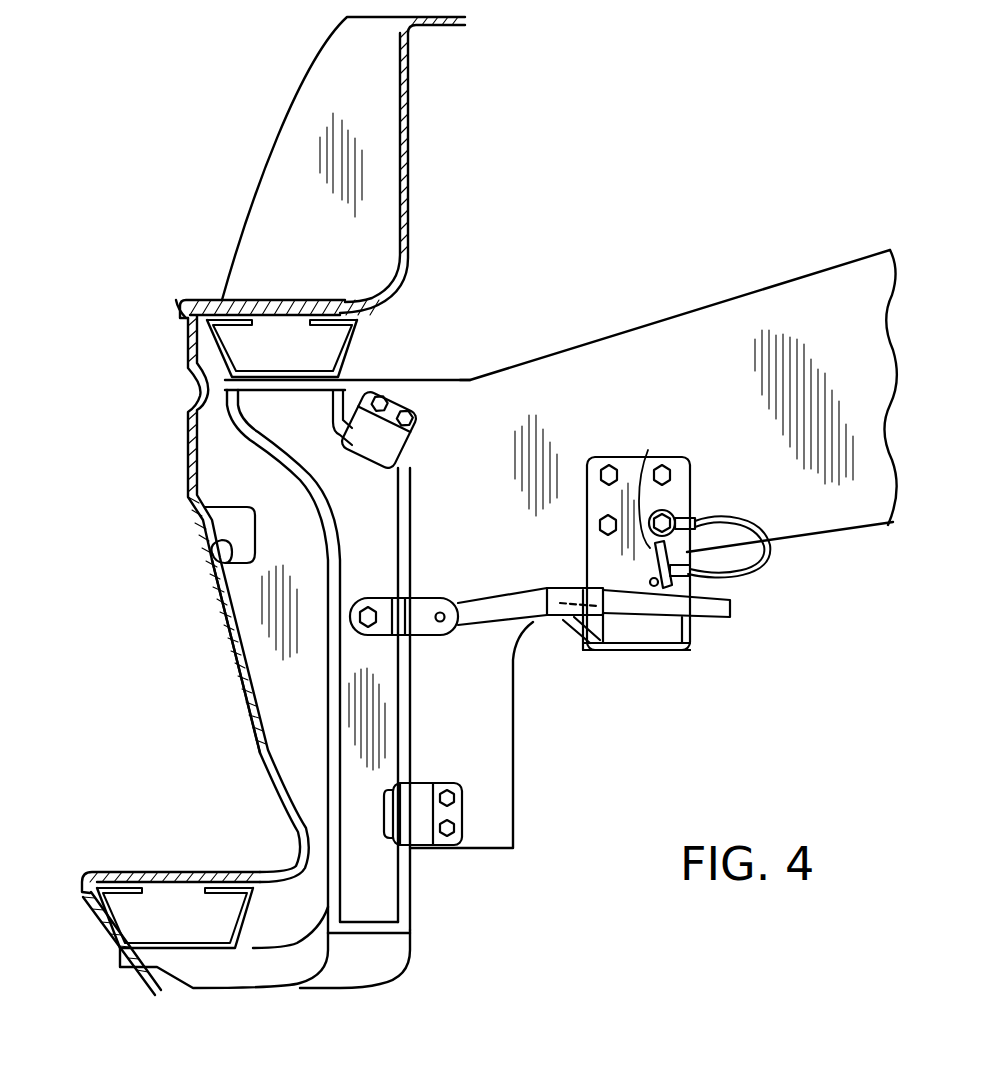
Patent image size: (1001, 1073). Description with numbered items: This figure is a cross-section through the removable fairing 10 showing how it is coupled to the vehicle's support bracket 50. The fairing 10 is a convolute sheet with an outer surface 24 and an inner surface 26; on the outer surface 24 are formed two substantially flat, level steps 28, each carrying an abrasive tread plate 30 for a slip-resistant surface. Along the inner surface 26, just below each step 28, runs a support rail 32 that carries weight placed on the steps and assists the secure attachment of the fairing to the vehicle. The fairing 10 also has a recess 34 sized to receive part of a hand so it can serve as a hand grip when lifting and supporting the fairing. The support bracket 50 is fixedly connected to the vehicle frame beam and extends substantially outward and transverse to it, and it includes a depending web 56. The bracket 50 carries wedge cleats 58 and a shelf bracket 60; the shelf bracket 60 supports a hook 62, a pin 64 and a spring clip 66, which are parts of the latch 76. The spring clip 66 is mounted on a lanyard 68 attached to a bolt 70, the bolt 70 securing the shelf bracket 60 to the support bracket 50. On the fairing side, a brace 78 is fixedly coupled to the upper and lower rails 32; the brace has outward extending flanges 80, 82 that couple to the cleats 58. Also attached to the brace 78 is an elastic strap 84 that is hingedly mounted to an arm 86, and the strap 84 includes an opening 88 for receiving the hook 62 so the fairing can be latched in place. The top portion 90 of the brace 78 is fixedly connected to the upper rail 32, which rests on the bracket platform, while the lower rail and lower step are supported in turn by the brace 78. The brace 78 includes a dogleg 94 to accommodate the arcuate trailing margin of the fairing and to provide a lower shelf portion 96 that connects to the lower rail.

The removable fairing 10 is at (188, 467).
The outer surface 24 is at (257, 760).
The inner surface 26 is at (260, 757).
The steps 28 is at (300, 300).
The abrasive tread plates 30 is at (188, 302).
The support rails 32 is at (350, 362).
The recess 34 is at (227, 563).
The support bracket 50 is at (708, 308).
The depending web 56 is at (503, 848).
The wedge cleats 58 is at (427, 433).
The shelf bracket 60 is at (588, 460).
The hook 62 is at (563, 620).
The pin 64 is at (637, 580).
The spring clip 66 is at (650, 481).
The lanyard 68 is at (763, 558).
The bolt 70 is at (657, 508).
The latch 76 is at (661, 660).
The brace 78 is at (413, 908).
The outward extending flange 80 is at (407, 465).
The outward extending flange 82 is at (420, 780).
The elastic strap 84 is at (733, 608).
The arm 86 is at (423, 600).
The opening 88 is at (500, 603).
The top portion 90 is at (257, 380).
The dogleg 94 is at (380, 967).
The lower shelf portion 96 is at (193, 970).